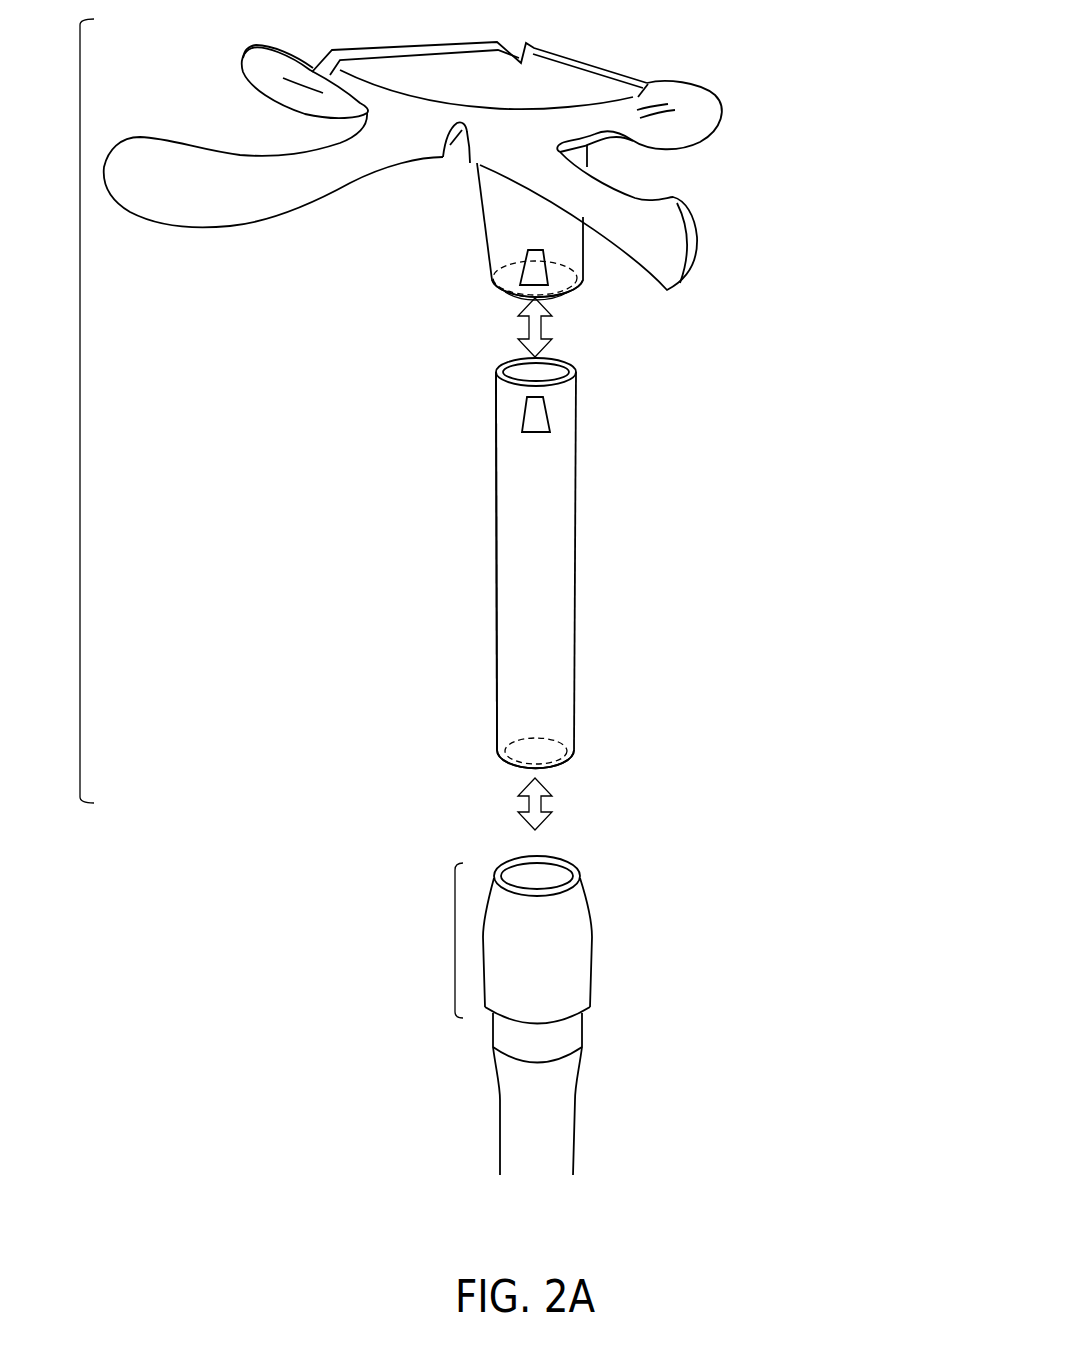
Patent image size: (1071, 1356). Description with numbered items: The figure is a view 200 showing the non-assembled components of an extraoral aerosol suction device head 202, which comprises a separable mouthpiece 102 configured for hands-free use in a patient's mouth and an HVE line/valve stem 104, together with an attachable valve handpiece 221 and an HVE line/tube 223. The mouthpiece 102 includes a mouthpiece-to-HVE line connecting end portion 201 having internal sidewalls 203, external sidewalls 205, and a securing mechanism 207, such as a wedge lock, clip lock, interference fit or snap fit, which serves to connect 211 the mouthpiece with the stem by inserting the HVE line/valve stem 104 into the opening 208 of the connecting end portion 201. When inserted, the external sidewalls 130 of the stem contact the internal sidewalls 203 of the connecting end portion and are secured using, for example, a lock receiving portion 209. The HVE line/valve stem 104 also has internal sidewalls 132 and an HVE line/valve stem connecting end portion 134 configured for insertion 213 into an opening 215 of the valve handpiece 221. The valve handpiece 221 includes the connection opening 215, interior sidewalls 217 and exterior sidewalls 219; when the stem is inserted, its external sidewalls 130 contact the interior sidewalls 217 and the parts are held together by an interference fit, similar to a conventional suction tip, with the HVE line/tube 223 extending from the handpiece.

The view 200 is at (944, 22).
The mouthpiece 102 is at (756, 292).
The extraoral aerosol suction device head 202 is at (62, 411).
The mouthpiece-to-HVE line connecting end portion 201 is at (465, 163).
The internal sidewalls 203 is at (494, 280).
The external sidewalls 205 is at (572, 247).
The securing mechanism 207 is at (532, 298).
The opening 208 is at (538, 299).
The connection 211 is at (543, 328).
The HVE line/valve stem 104 is at (574, 583).
The external sidewalls 130 is at (523, 612).
The lock receiving portion 209 is at (524, 418).
The internal sidewalls 132 is at (560, 767).
The HVE line/valve stem connecting end portion 134 is at (485, 770).
The insertion 213 is at (541, 800).
The opening 215 is at (585, 869).
The interior sidewalls 217 is at (521, 876).
The exterior sidewalls 219 is at (594, 902).
The valve handpiece 221 is at (455, 940).
The HVE line/tube 223 is at (578, 1117).